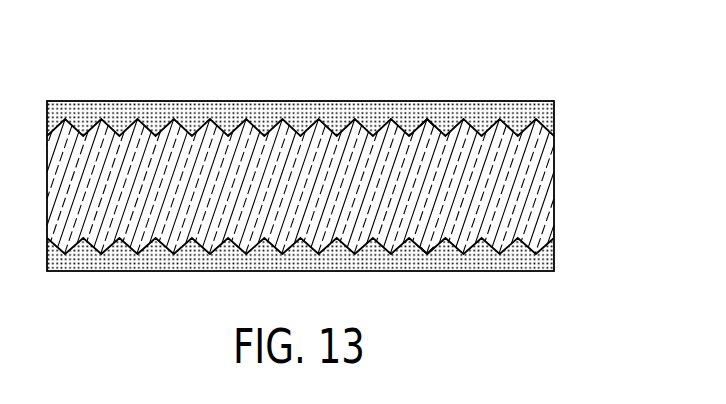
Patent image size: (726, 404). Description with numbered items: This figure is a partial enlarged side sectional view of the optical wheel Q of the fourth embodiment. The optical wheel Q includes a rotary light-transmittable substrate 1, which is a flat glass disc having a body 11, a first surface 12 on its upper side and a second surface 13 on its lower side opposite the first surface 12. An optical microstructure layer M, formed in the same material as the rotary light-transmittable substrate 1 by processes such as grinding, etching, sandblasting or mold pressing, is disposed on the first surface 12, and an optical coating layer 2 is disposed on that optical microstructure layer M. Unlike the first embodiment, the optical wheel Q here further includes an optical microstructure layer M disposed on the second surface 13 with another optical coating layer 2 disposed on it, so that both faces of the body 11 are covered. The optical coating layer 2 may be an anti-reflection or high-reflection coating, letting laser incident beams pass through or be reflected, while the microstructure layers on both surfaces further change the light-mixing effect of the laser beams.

The optical wheel Q is at (61, 32).
The rotary light-transmittable substrate 1 is at (554, 198).
The optical coating layer 2 is at (554, 112).
The body 11 is at (520, 158).
The first surface 12 is at (491, 122).
The second surface 13 is at (478, 244).
The optical microstructure layer M is at (433, 120).